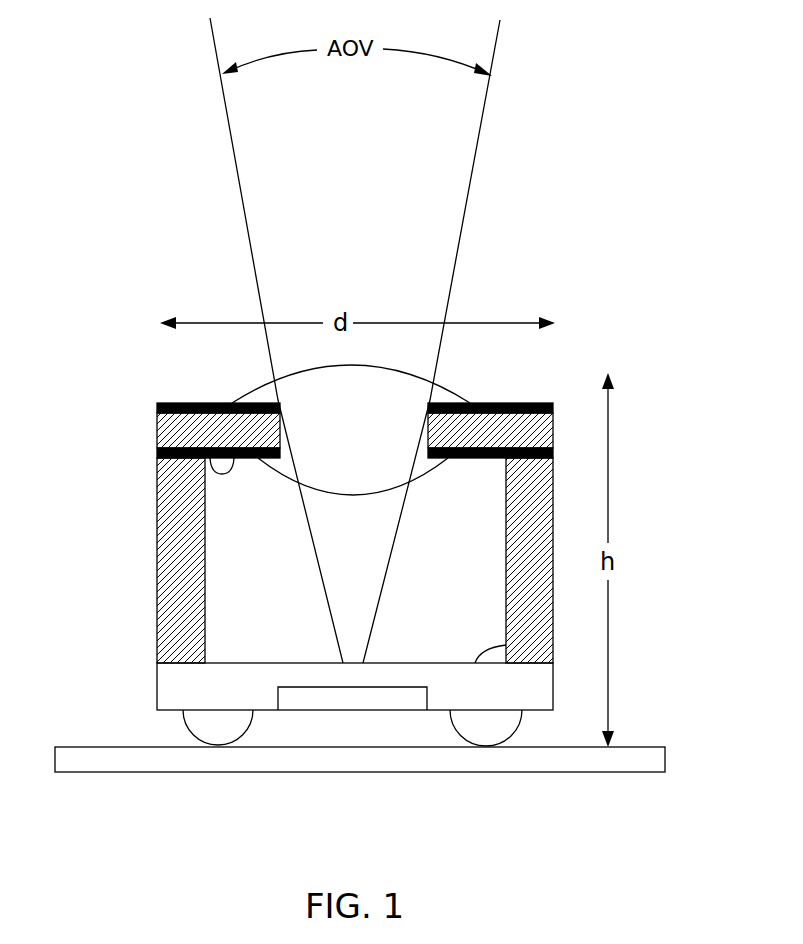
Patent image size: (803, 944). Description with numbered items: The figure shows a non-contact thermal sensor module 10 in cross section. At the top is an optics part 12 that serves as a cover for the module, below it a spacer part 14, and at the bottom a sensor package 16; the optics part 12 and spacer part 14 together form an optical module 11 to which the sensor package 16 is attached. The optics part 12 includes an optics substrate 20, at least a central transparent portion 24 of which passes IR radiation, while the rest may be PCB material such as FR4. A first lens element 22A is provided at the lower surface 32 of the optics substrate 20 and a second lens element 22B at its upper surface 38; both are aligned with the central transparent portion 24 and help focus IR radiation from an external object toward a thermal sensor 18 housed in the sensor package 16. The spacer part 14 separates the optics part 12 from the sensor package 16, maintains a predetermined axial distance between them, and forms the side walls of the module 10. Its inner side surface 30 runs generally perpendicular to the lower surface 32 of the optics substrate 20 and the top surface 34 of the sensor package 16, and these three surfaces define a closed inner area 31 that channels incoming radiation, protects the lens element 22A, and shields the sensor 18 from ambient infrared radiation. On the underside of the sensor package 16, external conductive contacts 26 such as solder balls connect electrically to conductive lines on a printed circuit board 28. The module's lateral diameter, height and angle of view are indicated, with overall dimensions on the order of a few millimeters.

The non-contact thermal sensor module 10 is at (590, 345).
The optical module 11 is at (52, 413).
The optics part 12 is at (560, 403).
The spacer part 14 is at (157, 568).
The sensor package 16 is at (168, 690).
The thermal sensor 18 is at (353, 703).
The optics substrate 20 is at (175, 430).
The first lens element 22A is at (413, 467).
The second lens element 22B is at (400, 374).
The central transparent portion 24 is at (345, 445).
The external conductive contacts 26 is at (222, 738).
The printed circuit board 28 is at (573, 777).
The inner side surface 30 is at (205, 628).
The inner area 31 is at (282, 560).
The lower surface 32 is at (230, 463).
The top surface 34 is at (503, 645).
The upper surface 38 is at (175, 403).